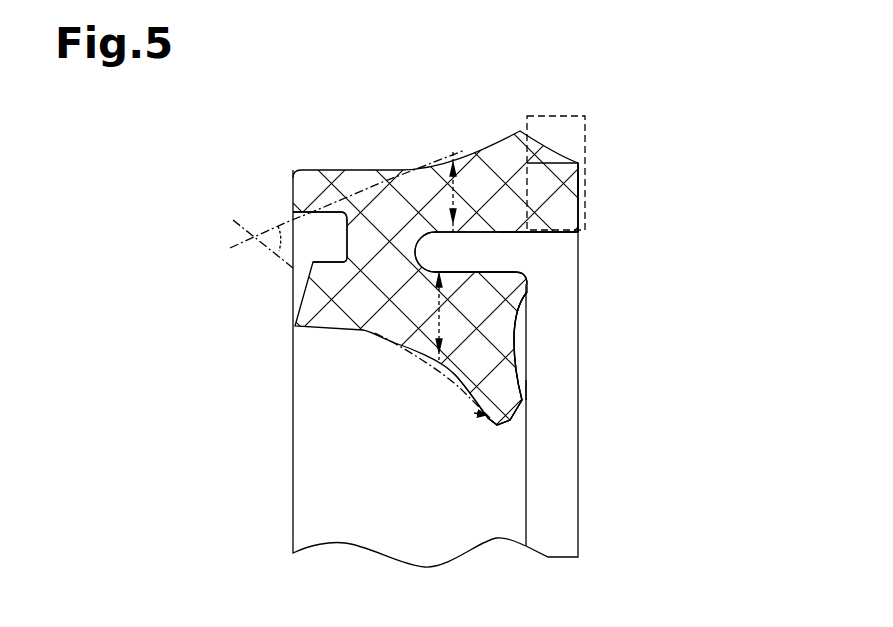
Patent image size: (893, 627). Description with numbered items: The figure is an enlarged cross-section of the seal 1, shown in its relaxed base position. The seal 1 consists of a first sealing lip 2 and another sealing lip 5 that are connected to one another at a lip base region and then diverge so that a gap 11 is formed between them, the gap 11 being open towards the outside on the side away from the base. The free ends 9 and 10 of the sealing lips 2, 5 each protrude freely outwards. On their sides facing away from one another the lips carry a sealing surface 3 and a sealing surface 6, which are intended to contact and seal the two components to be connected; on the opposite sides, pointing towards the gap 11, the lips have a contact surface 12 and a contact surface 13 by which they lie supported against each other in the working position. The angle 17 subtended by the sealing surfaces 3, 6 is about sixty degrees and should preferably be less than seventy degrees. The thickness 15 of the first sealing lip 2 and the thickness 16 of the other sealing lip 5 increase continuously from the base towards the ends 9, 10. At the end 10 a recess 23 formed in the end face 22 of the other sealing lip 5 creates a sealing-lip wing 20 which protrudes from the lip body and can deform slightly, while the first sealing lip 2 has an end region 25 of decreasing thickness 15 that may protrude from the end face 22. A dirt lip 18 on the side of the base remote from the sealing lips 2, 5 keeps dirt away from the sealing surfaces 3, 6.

The seal 1 is at (642, 112).
The first sealing lip 2 is at (580, 167).
The sealing surface 3 is at (492, 137).
The other sealing lip 5 is at (527, 330).
The sealing surface 6 is at (497, 427).
The end of first sealing lip 9 is at (588, 187).
The end of other sealing lip 10 is at (532, 389).
The gap 11 is at (551, 250).
The contact surface 12 is at (513, 234).
The contact surface 13 is at (509, 271).
The thickness of first sealing lip 15 is at (459, 208).
The thickness of second sealing lip 16 is at (436, 300).
The angle 17 is at (267, 240).
The dirt lip 18 is at (303, 183).
The sealing-lip wing 20 is at (505, 403).
The end face 22 is at (531, 290).
The recess 23 is at (520, 330).
The end region 25 is at (562, 111).